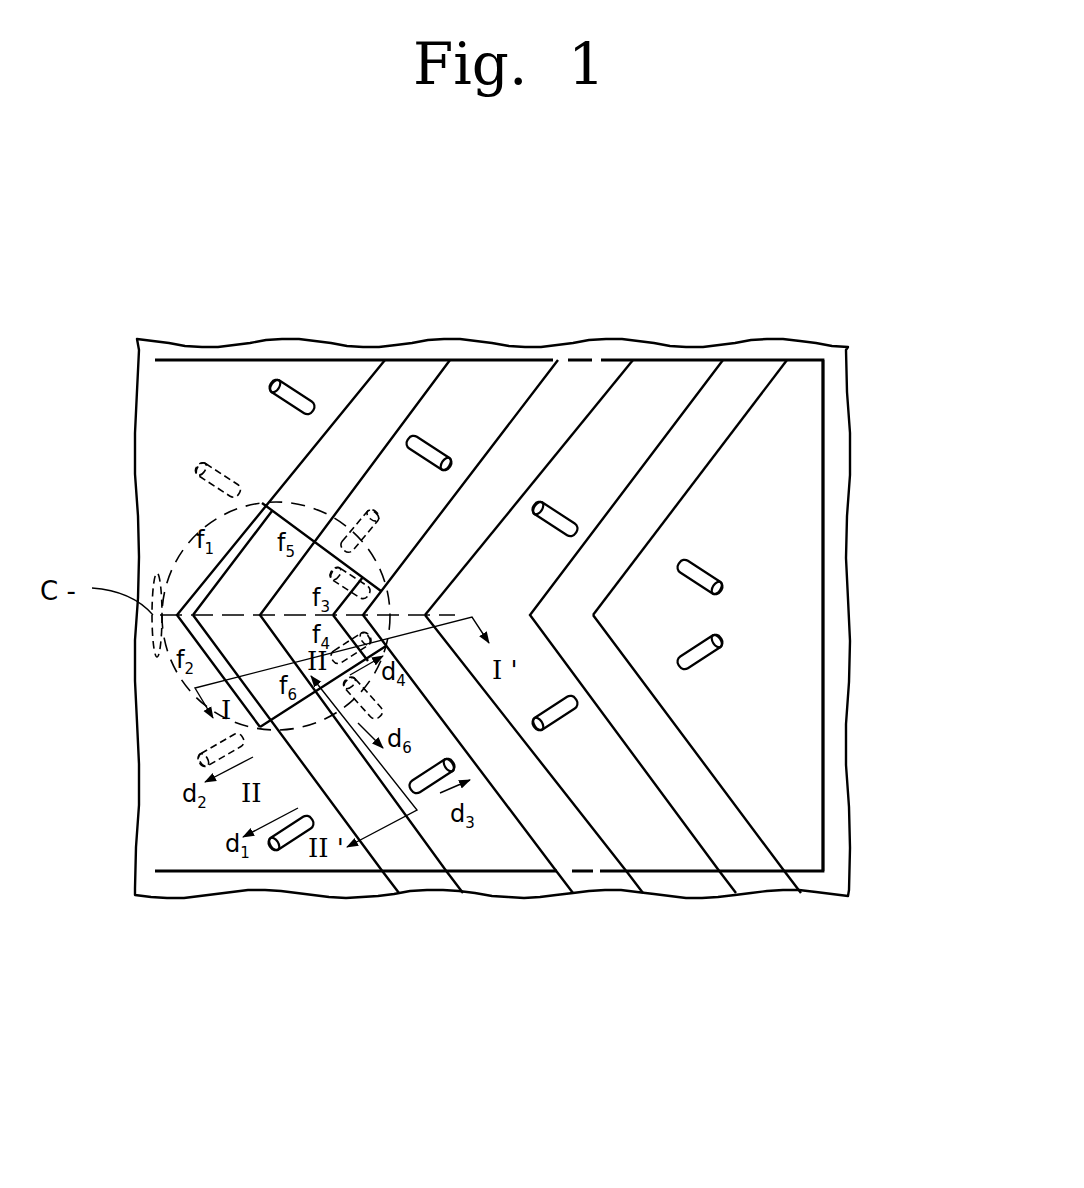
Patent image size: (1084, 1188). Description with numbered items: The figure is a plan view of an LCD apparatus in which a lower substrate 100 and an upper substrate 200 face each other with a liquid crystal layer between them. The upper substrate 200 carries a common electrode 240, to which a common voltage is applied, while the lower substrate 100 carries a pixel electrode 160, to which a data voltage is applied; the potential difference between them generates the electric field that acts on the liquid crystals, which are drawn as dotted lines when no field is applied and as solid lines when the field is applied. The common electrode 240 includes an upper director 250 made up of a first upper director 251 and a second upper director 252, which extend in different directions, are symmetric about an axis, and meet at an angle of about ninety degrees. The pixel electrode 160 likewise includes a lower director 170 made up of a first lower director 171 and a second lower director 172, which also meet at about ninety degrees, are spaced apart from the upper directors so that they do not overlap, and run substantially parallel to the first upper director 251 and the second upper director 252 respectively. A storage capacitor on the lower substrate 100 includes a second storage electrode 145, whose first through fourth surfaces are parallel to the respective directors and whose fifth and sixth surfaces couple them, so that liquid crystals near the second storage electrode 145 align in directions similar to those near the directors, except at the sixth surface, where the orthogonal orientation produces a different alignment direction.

The lower substrate 100 is at (827, 655).
The second storage electrode 145 is at (200, 580).
The pixel electrode 160 is at (797, 575).
The lower director 170 is at (693, 397).
The first lower director 171 is at (703, 456).
The second lower director 172 is at (703, 777).
The upper substrate 200 is at (847, 897).
The common electrode 240 is at (838, 835).
The upper director 250 is at (548, 355).
The first upper director 251 is at (580, 408).
The second upper director 252 is at (572, 825).